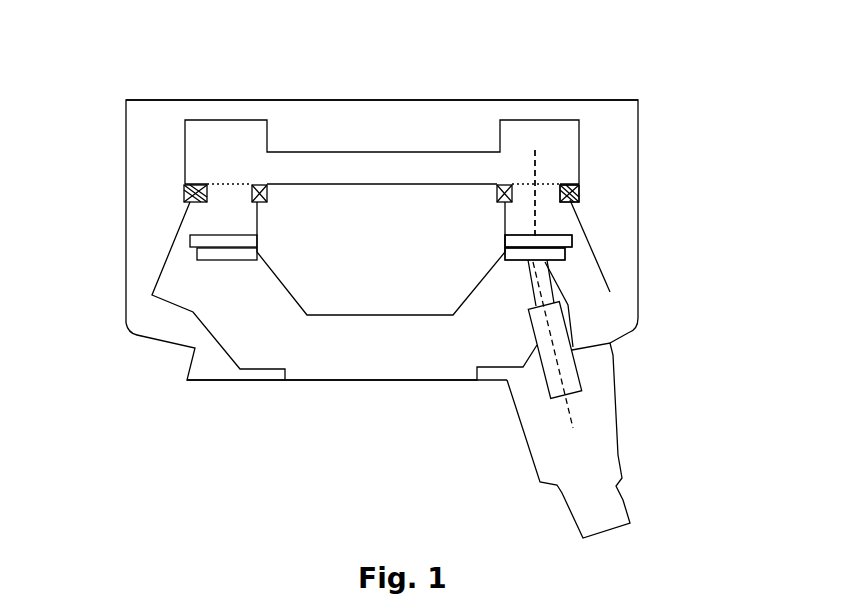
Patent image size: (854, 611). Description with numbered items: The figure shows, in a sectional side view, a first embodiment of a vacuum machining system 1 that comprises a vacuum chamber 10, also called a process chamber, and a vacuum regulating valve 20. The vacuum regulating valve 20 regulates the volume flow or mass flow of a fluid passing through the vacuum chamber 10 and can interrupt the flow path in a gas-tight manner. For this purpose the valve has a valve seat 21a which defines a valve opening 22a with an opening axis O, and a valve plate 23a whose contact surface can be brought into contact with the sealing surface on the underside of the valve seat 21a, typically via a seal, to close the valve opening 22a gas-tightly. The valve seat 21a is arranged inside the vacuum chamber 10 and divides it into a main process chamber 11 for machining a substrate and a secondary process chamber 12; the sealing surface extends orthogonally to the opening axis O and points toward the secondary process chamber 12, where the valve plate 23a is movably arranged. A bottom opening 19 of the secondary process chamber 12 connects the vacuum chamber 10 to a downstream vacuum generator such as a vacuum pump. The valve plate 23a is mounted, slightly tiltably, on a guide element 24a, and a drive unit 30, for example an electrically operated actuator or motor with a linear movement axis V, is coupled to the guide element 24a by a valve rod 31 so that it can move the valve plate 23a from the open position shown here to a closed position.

The vacuum machining system 1 is at (158, 62).
The vacuum chamber 10 is at (150, 225).
The main process chamber 11 is at (240, 162).
The secondary process chamber 12 is at (273, 334).
The bottom opening 19 is at (358, 380).
The vacuum regulating valve 20 is at (570, 222).
The valve seat 21a is at (577, 195).
The valve opening 22a is at (543, 195).
The valve plate 23a is at (540, 233).
The guide element 24a is at (548, 255).
The drive unit 30 is at (600, 438).
The valve rod 31 is at (578, 300).
The opening axis O is at (537, 167).
The linear movement axis V is at (570, 410).